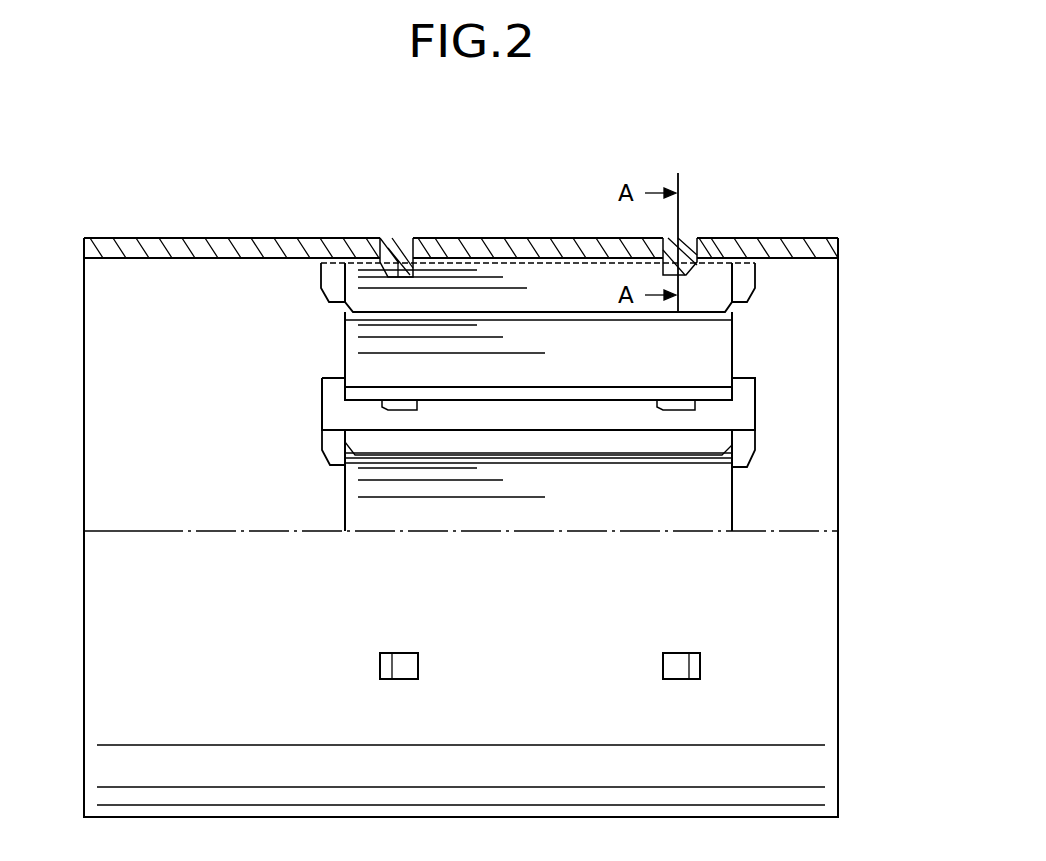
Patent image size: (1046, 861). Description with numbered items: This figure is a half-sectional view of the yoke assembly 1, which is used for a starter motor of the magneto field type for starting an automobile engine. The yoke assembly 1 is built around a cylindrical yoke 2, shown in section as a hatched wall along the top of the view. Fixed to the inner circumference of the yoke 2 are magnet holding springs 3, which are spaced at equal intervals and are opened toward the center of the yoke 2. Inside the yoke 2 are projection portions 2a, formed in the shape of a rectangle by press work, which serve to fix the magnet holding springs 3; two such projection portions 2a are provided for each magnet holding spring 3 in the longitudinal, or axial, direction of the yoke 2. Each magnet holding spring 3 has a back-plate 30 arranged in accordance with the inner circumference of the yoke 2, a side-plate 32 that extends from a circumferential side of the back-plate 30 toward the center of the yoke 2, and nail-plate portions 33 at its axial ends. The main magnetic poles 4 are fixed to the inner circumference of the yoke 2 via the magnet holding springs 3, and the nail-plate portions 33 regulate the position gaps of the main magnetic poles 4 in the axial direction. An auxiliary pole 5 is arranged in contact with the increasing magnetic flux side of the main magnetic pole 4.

The yoke assembly 1 is at (277, 213).
The yoke 2 is at (150, 250).
The projection portion 2a is at (404, 264).
The magnet holding spring 3 is at (606, 318).
The nail-plate portion 33 is at (746, 279).
The main magnetic pole 4 is at (510, 345).
The auxiliary pole 5 is at (457, 395).
The back-plate 30 is at (583, 415).
The side-plate 32 is at (482, 440).